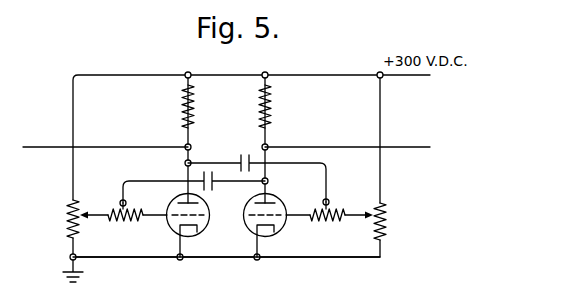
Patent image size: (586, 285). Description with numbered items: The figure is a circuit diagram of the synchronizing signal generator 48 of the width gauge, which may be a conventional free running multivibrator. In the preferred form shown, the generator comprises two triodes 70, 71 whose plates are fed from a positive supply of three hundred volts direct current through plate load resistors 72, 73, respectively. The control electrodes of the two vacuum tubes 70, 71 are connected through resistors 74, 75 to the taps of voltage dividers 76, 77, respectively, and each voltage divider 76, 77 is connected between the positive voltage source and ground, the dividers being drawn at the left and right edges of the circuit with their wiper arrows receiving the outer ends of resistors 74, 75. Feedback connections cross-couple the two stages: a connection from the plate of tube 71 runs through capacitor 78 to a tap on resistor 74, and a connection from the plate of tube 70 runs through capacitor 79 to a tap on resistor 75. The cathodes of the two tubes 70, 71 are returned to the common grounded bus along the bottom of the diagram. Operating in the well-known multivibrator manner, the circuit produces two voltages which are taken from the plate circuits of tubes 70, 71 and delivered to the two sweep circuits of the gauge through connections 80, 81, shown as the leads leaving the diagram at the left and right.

The synchronizing signal generator 48 is at (358, 283).
The triode 70 is at (200, 231).
The triode 71 is at (280, 237).
The plate load resistor 72 is at (195, 106).
The plate load resistor 73 is at (272, 106).
The resistor 74 is at (125, 226).
The resistor 75 is at (329, 224).
The voltage divider 76 is at (67, 218).
The voltage divider 77 is at (388, 216).
The capacitor 78 is at (210, 189).
The capacitor 79 is at (257, 166).
The connection 80 is at (61, 147).
The connection 81 is at (414, 146).